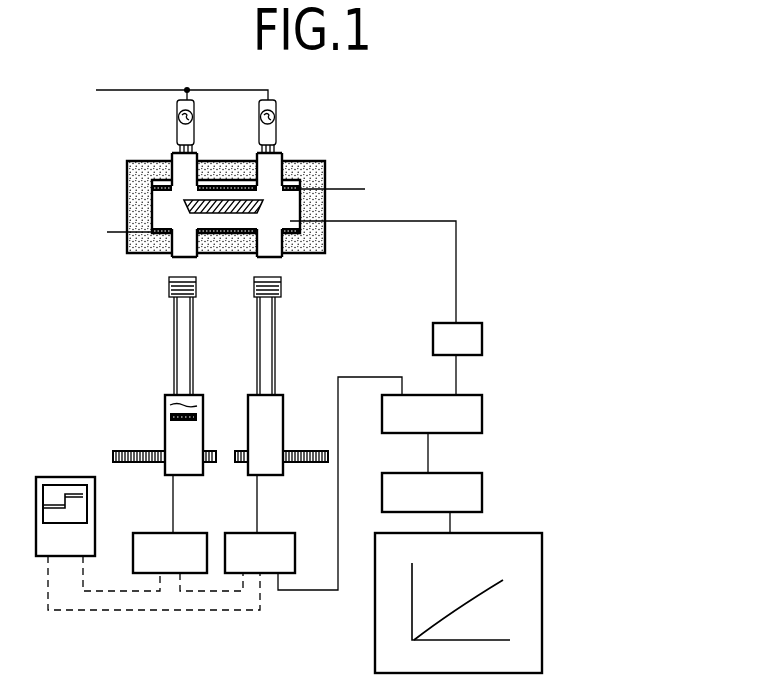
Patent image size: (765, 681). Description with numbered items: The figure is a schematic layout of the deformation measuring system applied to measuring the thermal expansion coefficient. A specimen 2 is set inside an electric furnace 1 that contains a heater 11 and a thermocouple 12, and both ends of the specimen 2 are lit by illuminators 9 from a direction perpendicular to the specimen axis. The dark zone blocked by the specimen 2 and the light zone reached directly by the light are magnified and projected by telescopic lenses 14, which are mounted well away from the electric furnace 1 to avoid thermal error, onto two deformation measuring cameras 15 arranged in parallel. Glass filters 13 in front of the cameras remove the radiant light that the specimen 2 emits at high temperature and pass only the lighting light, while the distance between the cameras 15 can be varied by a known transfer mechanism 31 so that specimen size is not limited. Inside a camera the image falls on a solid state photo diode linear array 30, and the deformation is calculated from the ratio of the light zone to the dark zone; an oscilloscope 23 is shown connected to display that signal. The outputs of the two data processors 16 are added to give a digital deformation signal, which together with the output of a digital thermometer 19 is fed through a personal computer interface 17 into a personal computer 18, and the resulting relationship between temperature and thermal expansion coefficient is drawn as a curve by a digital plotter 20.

The electric furnace 1 is at (138, 185).
The specimen 2 is at (229, 200).
The illuminator 9 is at (194, 120).
The heater 11 is at (289, 185).
The thermocouple 12 is at (229, 221).
The glass filters 13 is at (168, 287).
The telescopic lenses 14 is at (193, 335).
The deformation measuring cameras 15 is at (203, 432).
The data processors 16 is at (200, 533).
The personal computer interface 17 is at (470, 407).
The personal computer 18 is at (470, 483).
The digital thermometer 19 is at (470, 343).
The digital plotter 20 is at (380, 537).
The oscilloscope 23 is at (60, 477).
The solid state photo diode linear array 30 is at (184, 421).
The transfer mechanism 31 is at (138, 451).